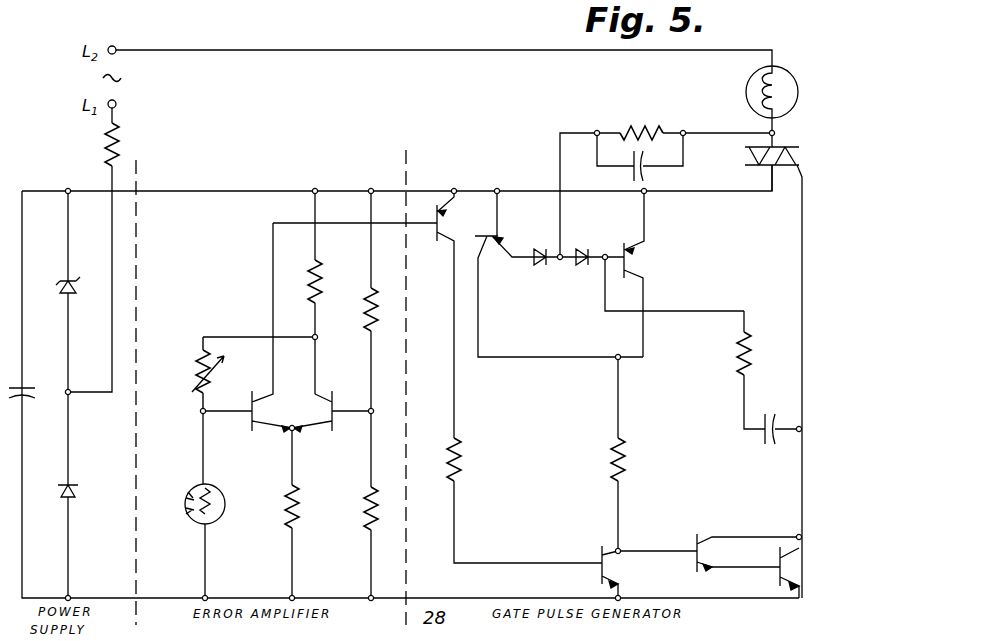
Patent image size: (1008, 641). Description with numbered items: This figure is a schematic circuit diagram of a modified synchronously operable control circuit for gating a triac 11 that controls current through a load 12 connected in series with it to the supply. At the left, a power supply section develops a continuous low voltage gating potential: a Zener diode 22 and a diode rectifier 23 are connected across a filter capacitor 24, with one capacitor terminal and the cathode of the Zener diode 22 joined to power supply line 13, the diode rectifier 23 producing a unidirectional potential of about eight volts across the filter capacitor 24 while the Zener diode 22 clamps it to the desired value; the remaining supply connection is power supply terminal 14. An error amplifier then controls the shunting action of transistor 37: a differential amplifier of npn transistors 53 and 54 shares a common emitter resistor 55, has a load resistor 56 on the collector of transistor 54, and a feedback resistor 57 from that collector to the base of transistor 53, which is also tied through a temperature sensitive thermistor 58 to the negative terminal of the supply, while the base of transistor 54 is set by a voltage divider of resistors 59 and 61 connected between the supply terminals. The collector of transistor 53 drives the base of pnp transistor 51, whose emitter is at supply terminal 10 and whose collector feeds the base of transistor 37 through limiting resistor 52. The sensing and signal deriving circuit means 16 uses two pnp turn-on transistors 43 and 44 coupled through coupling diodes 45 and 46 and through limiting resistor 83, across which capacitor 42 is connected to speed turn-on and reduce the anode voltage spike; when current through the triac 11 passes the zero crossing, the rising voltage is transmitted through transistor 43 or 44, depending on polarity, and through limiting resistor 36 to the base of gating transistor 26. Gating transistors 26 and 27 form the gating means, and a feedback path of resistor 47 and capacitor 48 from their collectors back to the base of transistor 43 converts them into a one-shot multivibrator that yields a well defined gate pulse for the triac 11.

The supply terminal 10 is at (199, 191).
The triac 11 is at (786, 147).
The lamp (load) 12 is at (746, 93).
The power supply line 13 is at (110, 177).
The power supply terminal 14 is at (288, 52).
The sensing and signal deriving circuit means 16 is at (532, 333).
The Zener diode 22 is at (59, 290).
The diode rectifier 23 is at (64, 495).
The filter capacitor 24 is at (32, 390).
The gating transistor 26 is at (696, 544).
The gating transistor 27 is at (778, 580).
The limiting resistor 36 is at (626, 456).
The shunt transistor 37 is at (600, 552).
The capacitor 42 is at (630, 176).
The turn-on pnp junction transistor 43 is at (621, 243).
The turn-on pnp junction transistor 44 is at (508, 240).
The coupling diode 45 is at (584, 268).
The coupling diode 46 is at (541, 268).
The feedback resistor 47 is at (751, 355).
The feedback capacitor 48 is at (762, 446).
The pnp junction transistor 51 is at (436, 239).
The limiting resistor 52 is at (460, 454).
The npn junction transistor 53 is at (252, 391).
The npn junction transistor 54 is at (333, 432).
The common emitter resistor 55 is at (300, 505).
The load resistor 56 is at (311, 269).
The feedback resistor 57 is at (201, 351).
The temperature sensitive thermistor 58 is at (216, 510).
The voltage dividing resistor 59 is at (367, 319).
The voltage dividing resistor 61 is at (365, 516).
The limiting resistor 83 is at (645, 129).